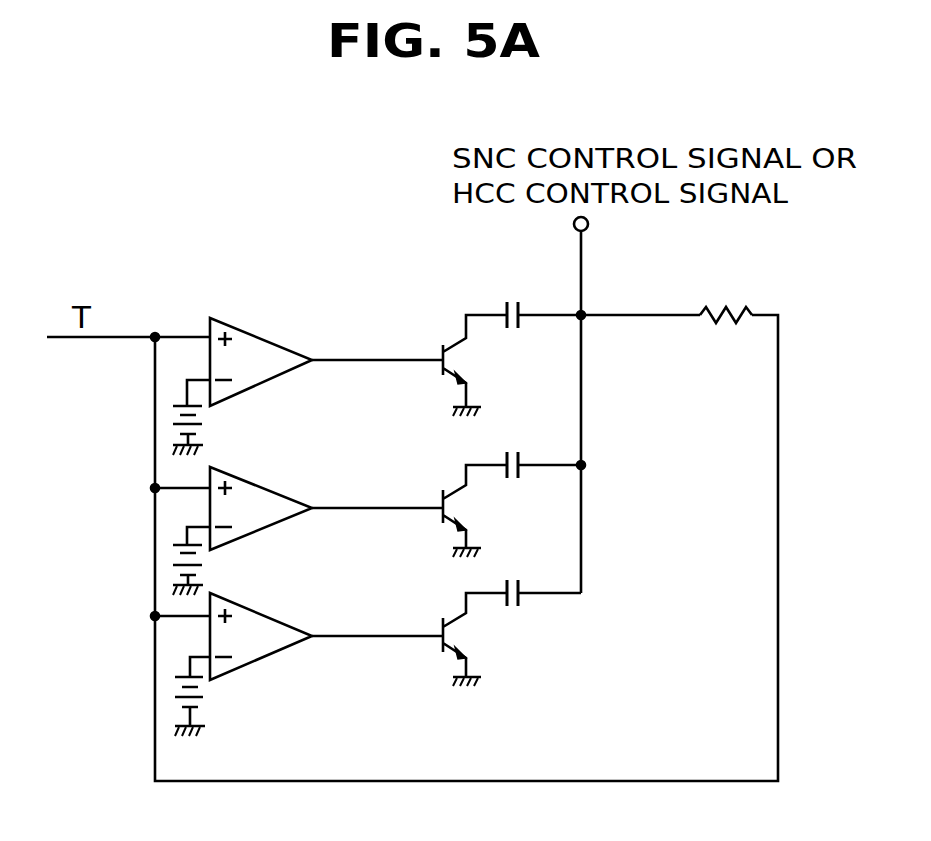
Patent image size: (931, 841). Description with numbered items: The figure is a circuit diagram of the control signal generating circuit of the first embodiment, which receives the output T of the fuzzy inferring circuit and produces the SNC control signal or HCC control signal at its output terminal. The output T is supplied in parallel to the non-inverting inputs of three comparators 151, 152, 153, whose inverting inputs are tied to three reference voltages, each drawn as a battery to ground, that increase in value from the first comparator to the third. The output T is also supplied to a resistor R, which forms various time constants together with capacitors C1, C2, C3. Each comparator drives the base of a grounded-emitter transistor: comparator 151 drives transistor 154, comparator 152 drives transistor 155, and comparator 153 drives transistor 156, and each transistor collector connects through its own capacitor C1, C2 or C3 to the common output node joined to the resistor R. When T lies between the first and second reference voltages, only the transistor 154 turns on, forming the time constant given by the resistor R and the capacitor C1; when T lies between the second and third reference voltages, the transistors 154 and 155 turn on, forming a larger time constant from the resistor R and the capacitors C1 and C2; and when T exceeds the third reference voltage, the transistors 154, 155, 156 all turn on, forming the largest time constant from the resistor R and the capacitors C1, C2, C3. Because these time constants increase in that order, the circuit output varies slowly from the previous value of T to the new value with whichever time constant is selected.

The comparator 151 is at (272, 340).
The comparator 152 is at (278, 493).
The comparator 153 is at (285, 618).
The transistor 154 is at (443, 340).
The transistor 155 is at (443, 485).
The transistor 156 is at (443, 613).
The capacitor C1 is at (512, 298).
The capacitor C2 is at (515, 447).
The capacitor C3 is at (515, 576).
The resistor R is at (724, 303).